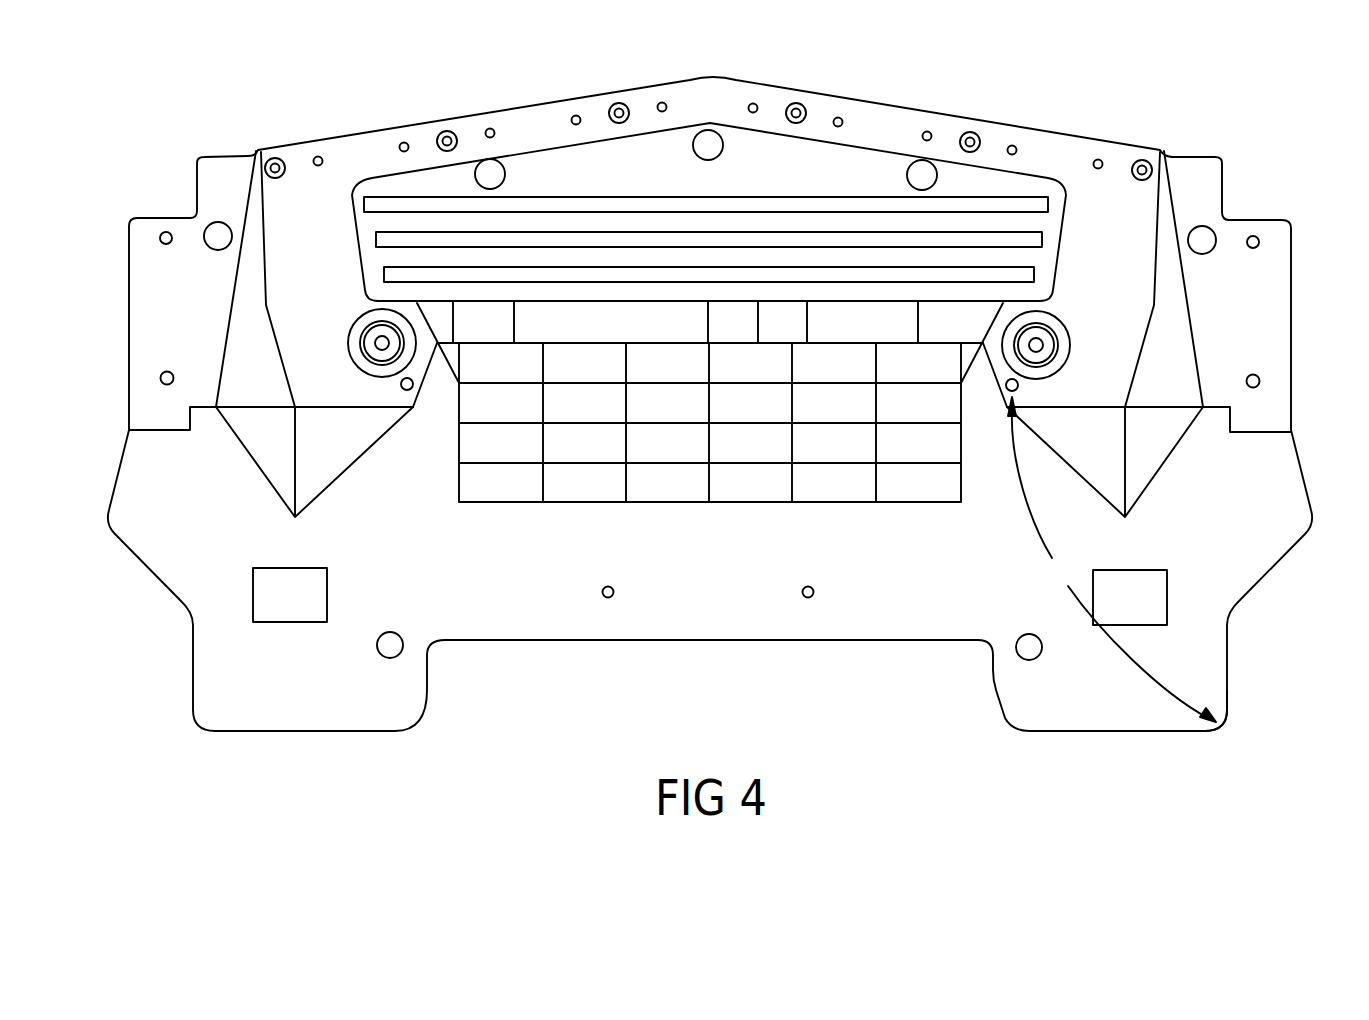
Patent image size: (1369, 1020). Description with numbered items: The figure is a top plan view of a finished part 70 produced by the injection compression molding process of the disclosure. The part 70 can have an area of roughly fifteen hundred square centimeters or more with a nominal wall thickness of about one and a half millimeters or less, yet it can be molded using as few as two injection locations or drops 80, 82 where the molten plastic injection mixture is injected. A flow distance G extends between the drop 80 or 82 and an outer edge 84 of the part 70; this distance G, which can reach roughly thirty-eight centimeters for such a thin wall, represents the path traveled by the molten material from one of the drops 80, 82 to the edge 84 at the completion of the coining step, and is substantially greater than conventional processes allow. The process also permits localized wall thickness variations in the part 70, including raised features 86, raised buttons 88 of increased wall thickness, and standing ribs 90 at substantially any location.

The part 70 is at (1288, 528).
The drop 80 is at (401, 385).
The drop 82 is at (1018, 387).
The edge 84 is at (1216, 710).
The raised feature 86 is at (360, 322).
The raised button 88 is at (798, 104).
The standing rib 90 is at (707, 362).
The flow distance G is at (1112, 559).